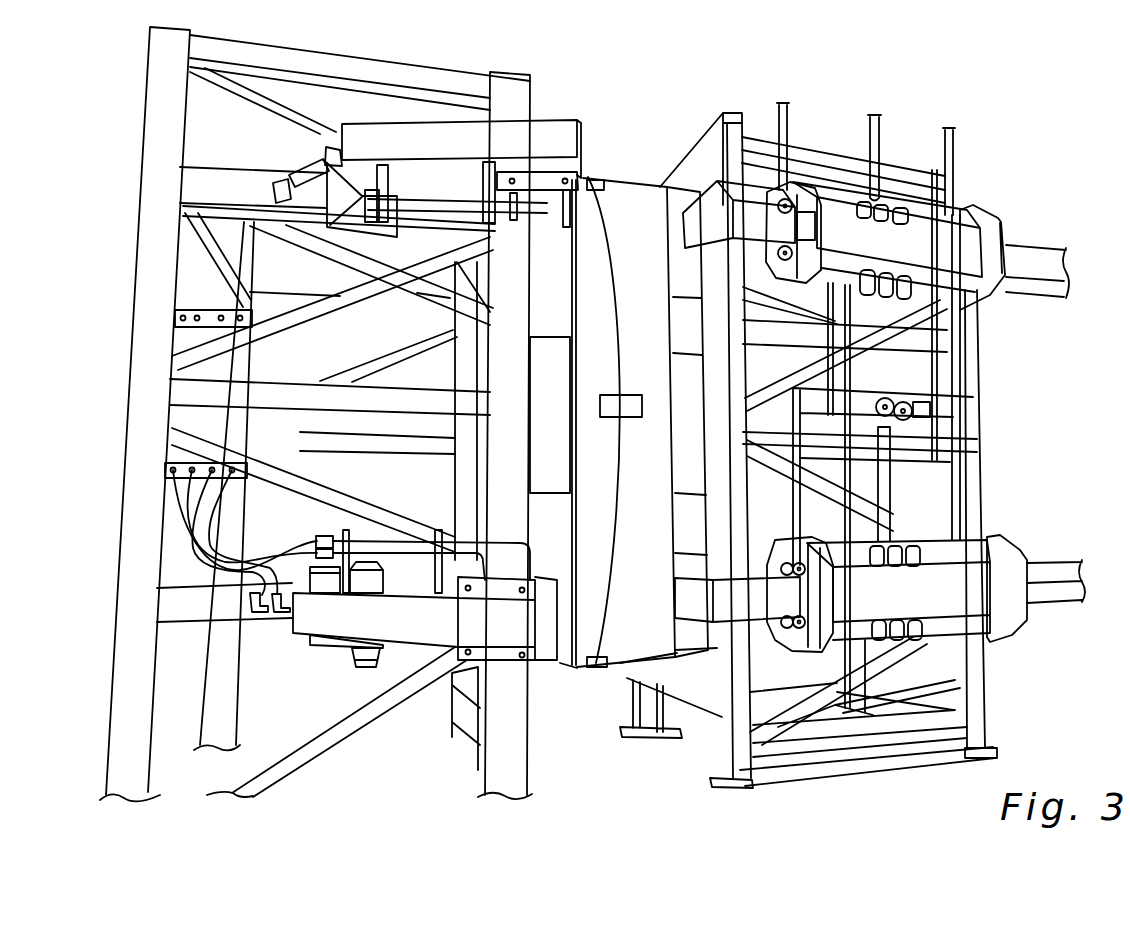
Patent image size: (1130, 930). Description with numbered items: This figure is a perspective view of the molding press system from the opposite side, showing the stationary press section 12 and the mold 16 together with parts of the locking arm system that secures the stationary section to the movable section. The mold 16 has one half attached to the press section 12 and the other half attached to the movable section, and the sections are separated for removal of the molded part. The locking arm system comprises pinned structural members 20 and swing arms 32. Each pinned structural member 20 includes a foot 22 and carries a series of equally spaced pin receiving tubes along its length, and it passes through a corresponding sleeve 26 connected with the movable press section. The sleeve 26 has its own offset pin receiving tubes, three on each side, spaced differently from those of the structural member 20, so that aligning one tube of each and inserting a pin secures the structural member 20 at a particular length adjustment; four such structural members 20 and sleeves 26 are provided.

The press section 12 is at (521, 414).
The mold 16 is at (626, 178).
The pinned structural member 20 is at (743, 234).
The foot 22 is at (722, 192).
The sleeve 26 is at (868, 251).
The swing arm 32 is at (466, 151).